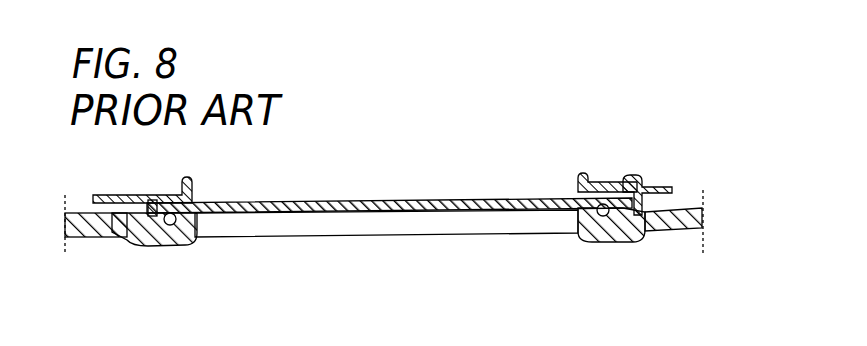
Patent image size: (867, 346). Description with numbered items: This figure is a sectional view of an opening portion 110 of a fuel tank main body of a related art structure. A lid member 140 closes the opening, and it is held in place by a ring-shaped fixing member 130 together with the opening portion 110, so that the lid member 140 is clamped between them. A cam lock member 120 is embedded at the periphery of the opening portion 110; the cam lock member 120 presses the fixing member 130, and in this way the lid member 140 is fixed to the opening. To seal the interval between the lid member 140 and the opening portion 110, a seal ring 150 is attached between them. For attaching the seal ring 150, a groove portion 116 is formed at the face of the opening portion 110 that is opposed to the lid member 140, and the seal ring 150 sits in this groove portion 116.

The opening portion 110 is at (578, 232).
The groove portion 116 is at (613, 244).
The cam lock member 120 is at (631, 177).
The fixing member 130 is at (601, 181).
The lid member 140 is at (372, 201).
The seal ring 150 is at (168, 247).